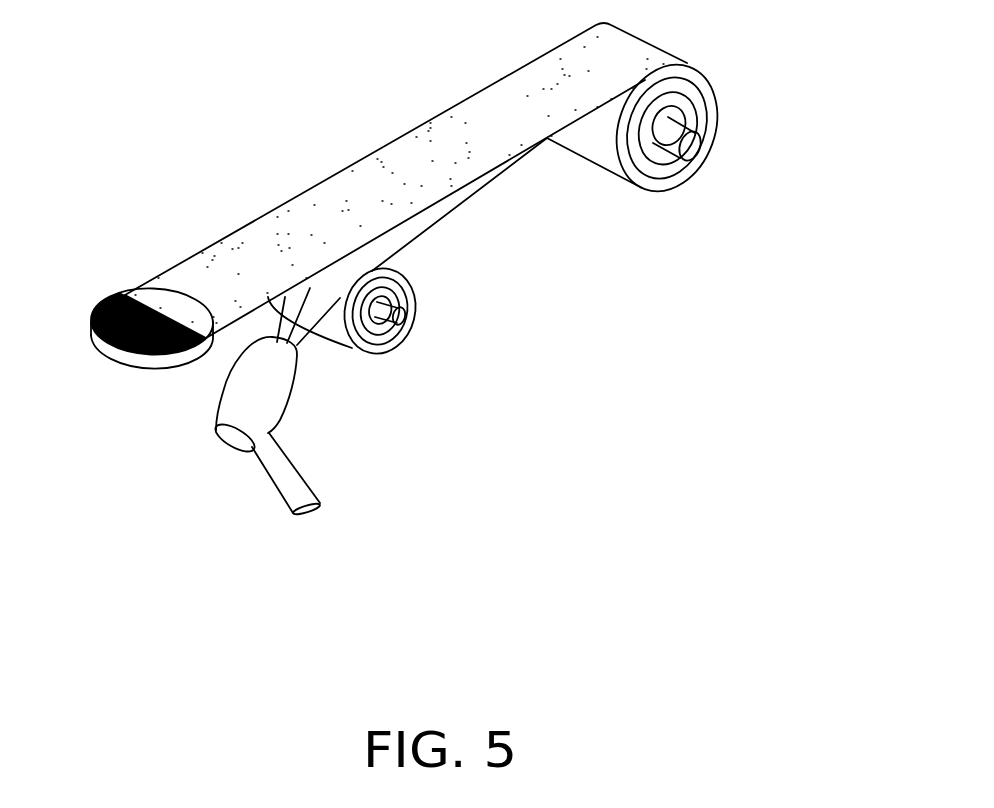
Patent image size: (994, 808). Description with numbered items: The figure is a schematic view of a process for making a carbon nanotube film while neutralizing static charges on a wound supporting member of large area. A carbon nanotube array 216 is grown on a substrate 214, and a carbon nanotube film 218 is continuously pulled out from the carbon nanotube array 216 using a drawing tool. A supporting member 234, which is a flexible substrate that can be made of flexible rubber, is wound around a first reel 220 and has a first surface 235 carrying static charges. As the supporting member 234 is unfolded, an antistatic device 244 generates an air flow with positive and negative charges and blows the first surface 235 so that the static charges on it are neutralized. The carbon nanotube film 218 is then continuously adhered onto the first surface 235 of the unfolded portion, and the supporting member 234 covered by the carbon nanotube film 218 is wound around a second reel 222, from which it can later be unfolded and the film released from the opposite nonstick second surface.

The substrate 214 is at (112, 355).
The carbon nanotube array 216 is at (147, 312).
The carbon nanotube film 218 is at (390, 175).
The second reel 222 is at (692, 150).
The first surface 235 is at (407, 230).
The supporting member 234 is at (375, 343).
The first reel 220 is at (403, 313).
The antistatic device 244 is at (298, 485).